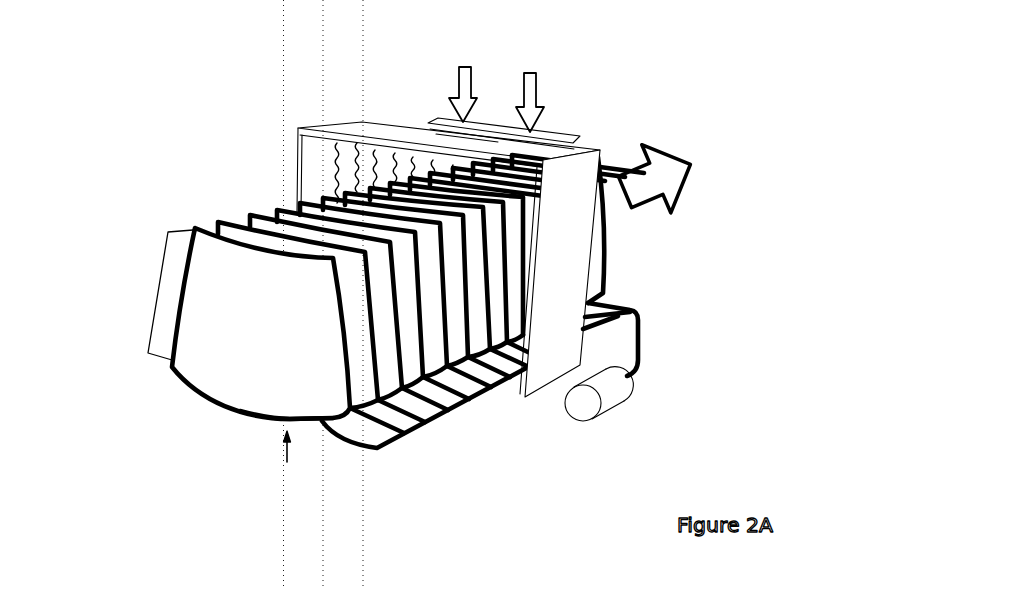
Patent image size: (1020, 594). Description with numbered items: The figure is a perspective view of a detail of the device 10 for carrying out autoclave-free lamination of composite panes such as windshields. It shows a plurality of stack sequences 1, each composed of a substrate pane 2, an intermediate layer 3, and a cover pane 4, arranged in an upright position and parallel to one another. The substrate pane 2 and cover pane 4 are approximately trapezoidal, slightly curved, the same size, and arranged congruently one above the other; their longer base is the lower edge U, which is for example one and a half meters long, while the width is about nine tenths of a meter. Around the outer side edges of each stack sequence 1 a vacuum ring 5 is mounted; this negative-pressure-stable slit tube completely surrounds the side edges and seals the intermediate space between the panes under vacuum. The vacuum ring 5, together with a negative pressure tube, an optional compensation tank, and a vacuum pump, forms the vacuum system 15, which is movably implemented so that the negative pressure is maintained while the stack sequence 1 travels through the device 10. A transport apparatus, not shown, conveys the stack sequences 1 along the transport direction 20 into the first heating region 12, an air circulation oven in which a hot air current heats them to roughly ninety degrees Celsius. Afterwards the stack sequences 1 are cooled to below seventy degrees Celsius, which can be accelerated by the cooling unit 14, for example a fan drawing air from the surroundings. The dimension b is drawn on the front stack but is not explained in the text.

The device 10 is at (155, 110).
The first heating region 12 is at (325, 110).
The cooling unit 14 is at (438, 110).
The stack sequence 1 is at (193, 222).
The substrate pane 2 is at (233, 339).
The intermediate layer 3 is at (233, 339).
The cover pane 4 is at (229, 383).
The vacuum ring 5 is at (264, 413).
The vacuum system 15 is at (643, 342).
The transport direction 20 is at (654, 179).
The fin width b is at (158, 292).
The lower edge U is at (280, 461).